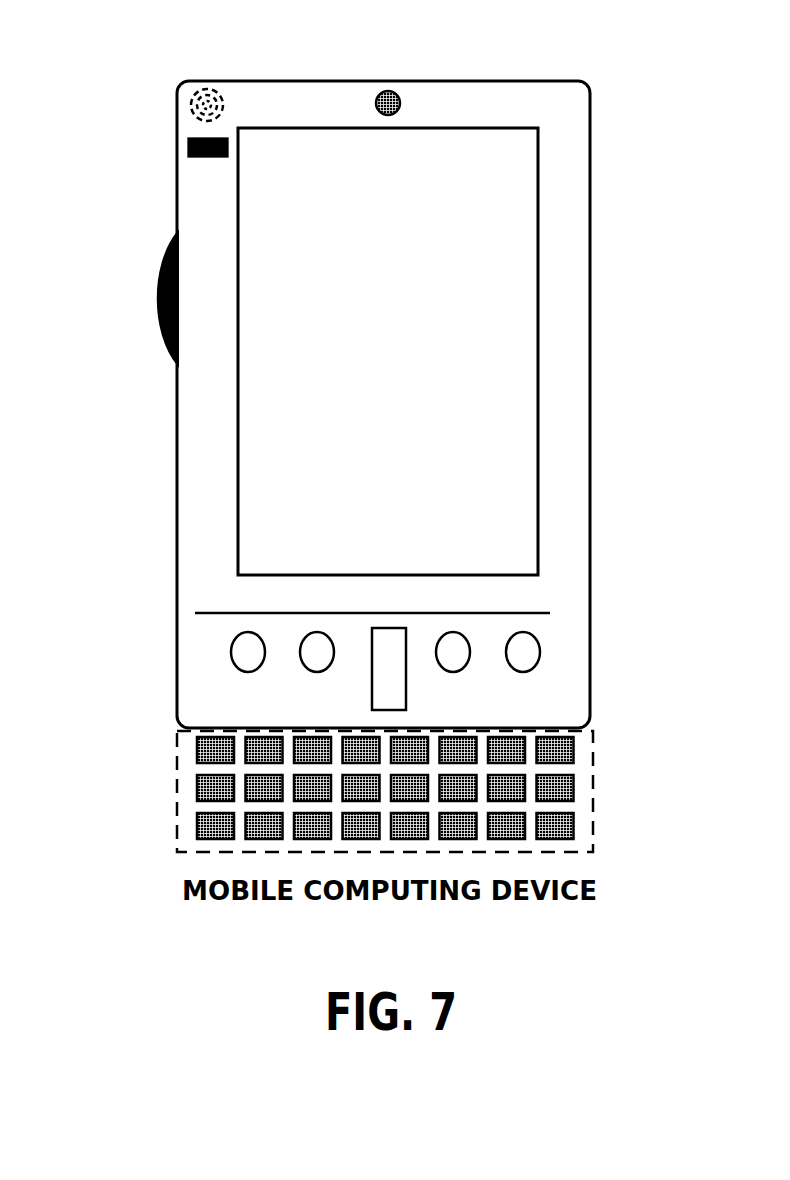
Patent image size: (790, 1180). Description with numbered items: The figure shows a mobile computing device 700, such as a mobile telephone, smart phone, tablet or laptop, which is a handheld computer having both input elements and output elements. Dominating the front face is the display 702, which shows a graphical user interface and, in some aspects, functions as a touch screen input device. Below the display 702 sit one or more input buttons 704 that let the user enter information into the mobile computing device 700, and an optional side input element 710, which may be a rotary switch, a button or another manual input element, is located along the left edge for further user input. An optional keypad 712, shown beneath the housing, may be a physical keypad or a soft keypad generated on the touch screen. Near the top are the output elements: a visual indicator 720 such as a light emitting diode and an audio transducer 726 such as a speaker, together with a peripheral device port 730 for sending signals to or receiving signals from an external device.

The mobile computing device 700 is at (593, 98).
The display 702 is at (263, 511).
The input buttons 704 is at (527, 662).
The side input element 710 is at (155, 306).
The keypad 712 is at (177, 818).
The visual indicator 720 is at (188, 140).
The audio transducer 726 is at (190, 98).
The peripheral device port 730 is at (399, 99).